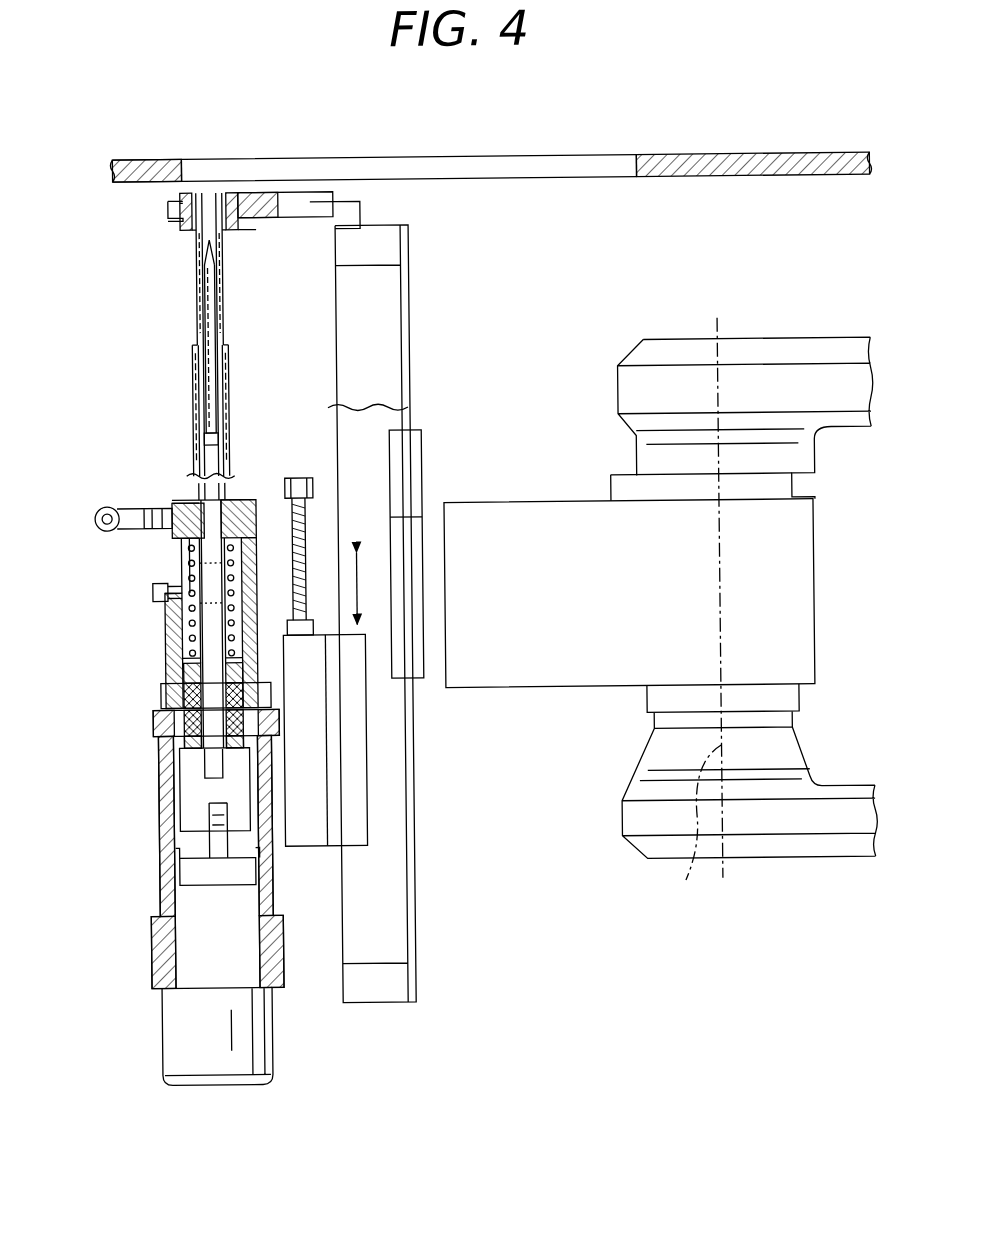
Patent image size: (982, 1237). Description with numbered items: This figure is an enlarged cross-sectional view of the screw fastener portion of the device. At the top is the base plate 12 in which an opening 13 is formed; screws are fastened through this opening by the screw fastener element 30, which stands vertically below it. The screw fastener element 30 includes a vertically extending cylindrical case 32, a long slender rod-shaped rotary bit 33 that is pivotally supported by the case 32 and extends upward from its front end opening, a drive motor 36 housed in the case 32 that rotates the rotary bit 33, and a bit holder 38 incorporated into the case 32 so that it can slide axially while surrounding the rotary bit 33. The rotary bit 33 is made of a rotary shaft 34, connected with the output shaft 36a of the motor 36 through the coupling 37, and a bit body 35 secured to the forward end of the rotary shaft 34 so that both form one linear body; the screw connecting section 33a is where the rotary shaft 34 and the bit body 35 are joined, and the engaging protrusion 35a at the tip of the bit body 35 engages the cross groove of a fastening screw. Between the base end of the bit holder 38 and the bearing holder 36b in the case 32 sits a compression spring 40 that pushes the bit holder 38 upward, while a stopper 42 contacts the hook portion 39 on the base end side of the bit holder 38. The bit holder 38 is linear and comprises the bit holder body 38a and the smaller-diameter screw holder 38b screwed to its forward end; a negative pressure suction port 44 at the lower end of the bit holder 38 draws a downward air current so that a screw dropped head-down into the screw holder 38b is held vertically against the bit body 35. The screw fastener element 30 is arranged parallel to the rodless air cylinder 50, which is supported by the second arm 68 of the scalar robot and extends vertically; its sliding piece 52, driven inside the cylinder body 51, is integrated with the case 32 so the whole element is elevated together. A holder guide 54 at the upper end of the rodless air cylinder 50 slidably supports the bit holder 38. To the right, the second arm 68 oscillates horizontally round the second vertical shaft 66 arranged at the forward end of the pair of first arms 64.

The base plate 12 is at (792, 156).
The opening 13 is at (633, 156).
The holder guide 54 is at (254, 189).
The screw fastener element 30 is at (240, 340).
The engaging protrusion 35a is at (200, 243).
The bit holder 38 is at (136, 337).
The bit holder body 38a is at (196, 385).
The screw holder 38b is at (196, 318).
The rotary bit 33 is at (177, 507).
The screw connecting section 33a is at (214, 438).
The bit body 35 is at (208, 418).
The rotary shaft 34 is at (206, 494).
The negative pressure suction port 44 is at (140, 528).
The stopper 42 is at (150, 588).
The hook portion 39 is at (163, 612).
The compression spring 40 is at (163, 632).
The bearing holder 36b is at (162, 655).
The case 32 is at (148, 605).
The coupling 37 is at (190, 790).
The output shaft 36a is at (210, 842).
The drive motor 36 is at (170, 884).
The rodless air cylinder 50 is at (377, 901).
The cylinder body 51 is at (393, 742).
The sliding piece 52 is at (358, 806).
The second arm 68 is at (531, 508).
The first arms 64 is at (795, 343).
The second vertical shaft 66 is at (693, 834).